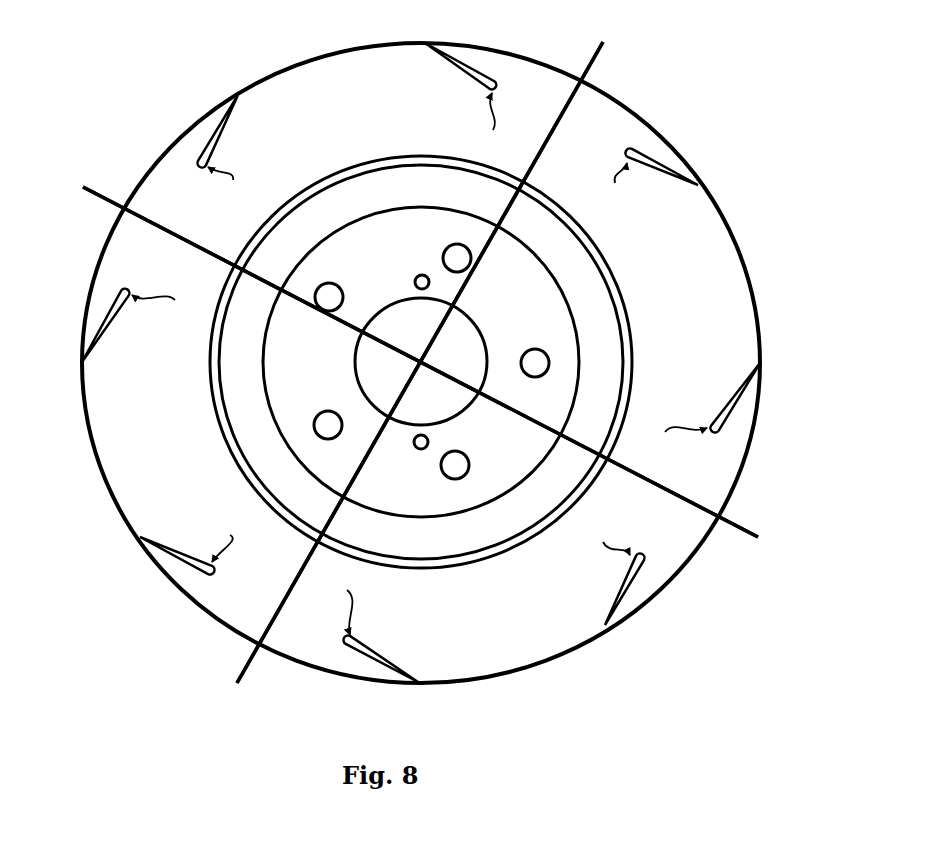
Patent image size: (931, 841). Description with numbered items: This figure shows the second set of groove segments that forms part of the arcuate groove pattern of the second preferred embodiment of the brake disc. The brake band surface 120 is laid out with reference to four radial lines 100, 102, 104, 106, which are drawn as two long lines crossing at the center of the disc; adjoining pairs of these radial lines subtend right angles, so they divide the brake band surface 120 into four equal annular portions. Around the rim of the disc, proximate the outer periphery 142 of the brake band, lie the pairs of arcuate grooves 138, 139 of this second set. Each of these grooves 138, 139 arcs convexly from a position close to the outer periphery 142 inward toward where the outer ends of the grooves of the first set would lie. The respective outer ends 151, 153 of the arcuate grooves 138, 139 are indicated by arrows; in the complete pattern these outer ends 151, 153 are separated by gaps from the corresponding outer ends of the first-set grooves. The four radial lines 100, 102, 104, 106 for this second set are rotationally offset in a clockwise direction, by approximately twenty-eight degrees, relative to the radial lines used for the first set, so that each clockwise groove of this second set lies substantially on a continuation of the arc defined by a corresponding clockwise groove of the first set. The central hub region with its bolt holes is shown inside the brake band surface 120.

The radial line 100 is at (597, 56).
The radial line 102 is at (747, 530).
The radial line 104 is at (248, 672).
The radial line 106 is at (93, 197).
The brake band surface 120 is at (421, 346).
The arcuate groove 138 is at (453, 62).
The arcuate groove 139 is at (218, 135).
The outer periphery 142 is at (628, 108).
The outer end 151 is at (419, 364).
The outer end 153 is at (420, 362).